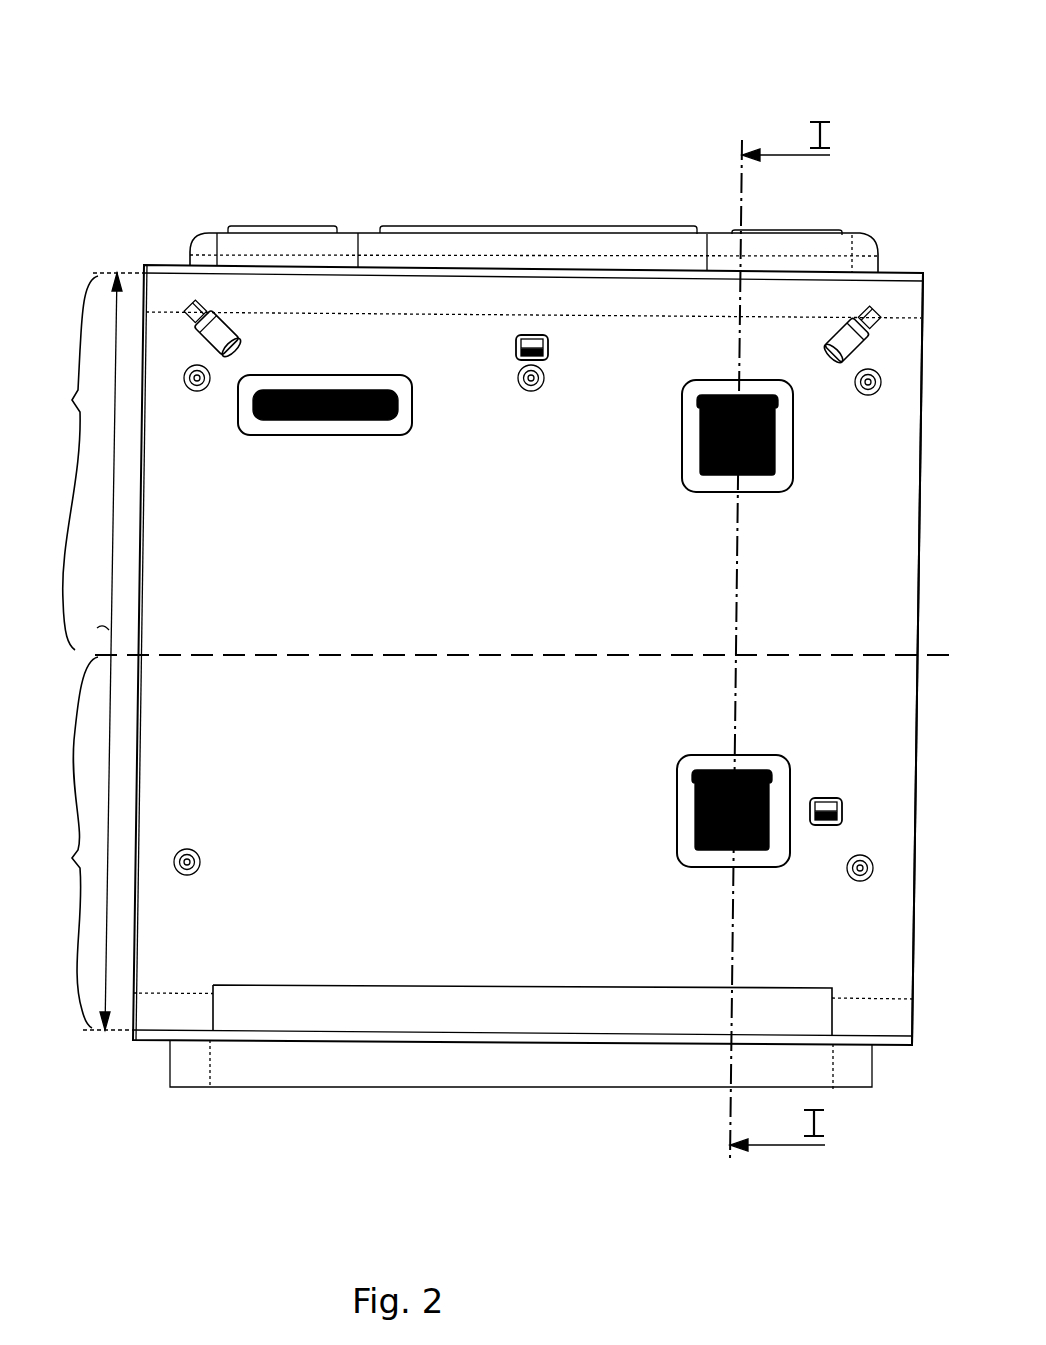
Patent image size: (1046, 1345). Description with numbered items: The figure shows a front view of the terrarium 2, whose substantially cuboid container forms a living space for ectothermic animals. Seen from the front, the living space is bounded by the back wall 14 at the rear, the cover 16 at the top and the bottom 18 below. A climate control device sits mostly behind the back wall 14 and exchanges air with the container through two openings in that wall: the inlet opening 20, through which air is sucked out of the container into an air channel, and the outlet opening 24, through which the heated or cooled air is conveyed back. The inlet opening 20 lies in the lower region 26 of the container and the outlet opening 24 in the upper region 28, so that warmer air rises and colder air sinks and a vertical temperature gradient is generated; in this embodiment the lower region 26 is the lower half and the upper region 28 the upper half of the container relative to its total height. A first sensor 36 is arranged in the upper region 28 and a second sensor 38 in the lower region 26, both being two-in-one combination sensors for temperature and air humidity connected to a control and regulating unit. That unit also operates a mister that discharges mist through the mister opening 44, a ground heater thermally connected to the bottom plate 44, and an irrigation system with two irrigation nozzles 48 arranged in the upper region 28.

The terrarium 2 is at (385, 147).
The back wall 14 is at (903, 975).
The cover 16 is at (165, 268).
The bottom 18 is at (148, 1037).
The inlet opening 20 is at (666, 860).
The outlet opening 24 is at (668, 486).
The lower region 26 is at (69, 842).
The upper region 28 is at (68, 463).
The first sensor 36 is at (506, 365).
The second sensor 38 is at (824, 790).
The mister opening 44 is at (317, 445).
The irrigation nozzles 48 is at (230, 326).